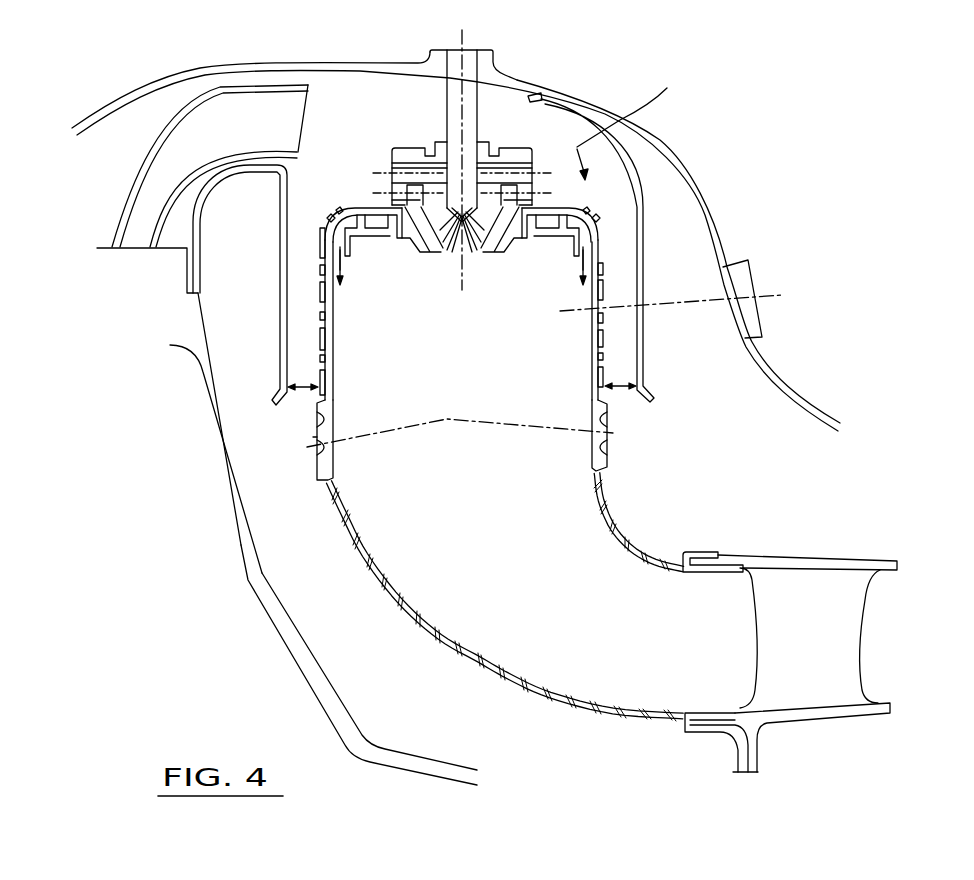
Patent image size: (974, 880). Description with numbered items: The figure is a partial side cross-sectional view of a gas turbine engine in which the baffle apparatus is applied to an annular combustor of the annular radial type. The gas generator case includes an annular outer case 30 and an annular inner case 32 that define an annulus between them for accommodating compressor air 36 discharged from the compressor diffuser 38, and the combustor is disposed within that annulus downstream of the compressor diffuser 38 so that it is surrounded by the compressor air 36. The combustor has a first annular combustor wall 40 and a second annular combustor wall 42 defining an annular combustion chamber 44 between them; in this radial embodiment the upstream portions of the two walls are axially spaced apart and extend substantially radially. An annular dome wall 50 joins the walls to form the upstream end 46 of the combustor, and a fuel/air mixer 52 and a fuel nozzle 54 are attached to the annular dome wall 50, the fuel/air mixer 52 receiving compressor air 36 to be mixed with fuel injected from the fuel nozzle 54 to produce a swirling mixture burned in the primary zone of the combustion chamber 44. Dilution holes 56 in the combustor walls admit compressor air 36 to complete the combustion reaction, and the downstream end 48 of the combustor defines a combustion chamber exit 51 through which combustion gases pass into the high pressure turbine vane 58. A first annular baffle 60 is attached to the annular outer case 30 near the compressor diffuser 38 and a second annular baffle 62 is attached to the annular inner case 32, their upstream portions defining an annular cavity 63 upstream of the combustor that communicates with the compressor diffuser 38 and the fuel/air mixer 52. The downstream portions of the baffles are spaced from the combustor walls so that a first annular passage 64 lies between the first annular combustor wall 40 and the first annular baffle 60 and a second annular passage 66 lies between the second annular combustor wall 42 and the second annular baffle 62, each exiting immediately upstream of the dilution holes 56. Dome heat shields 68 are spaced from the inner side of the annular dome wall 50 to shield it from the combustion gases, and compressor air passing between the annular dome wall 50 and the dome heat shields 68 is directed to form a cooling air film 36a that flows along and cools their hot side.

The annular outer case 30 is at (670, 145).
The annular inner case 32 is at (278, 637).
The compressor air 36 is at (630, 119).
The cooling air film 36a is at (343, 258).
The compressor diffuser 38 is at (157, 167).
The first annular combustor wall 40 is at (628, 550).
The second annular combustor wall 42 is at (362, 540).
The annular combustion chamber 44 is at (525, 401).
The upstream end 46 is at (323, 225).
The downstream end 48 is at (718, 553).
The annular dome wall 50 is at (357, 207).
The combustion chamber exit 51 is at (733, 677).
The fuel/air mixer 52 is at (345, 172).
The fuel nozzle 54 is at (447, 102).
The dilution holes 56 is at (303, 392).
The high pressure turbine vane 58 is at (843, 619).
The first annular baffle 60 is at (645, 214).
The second annular baffle 62 is at (280, 312).
The annular cavity 63 is at (398, 132).
The first annular passage 64 is at (622, 390).
The second annular passage 66 is at (313, 437).
The dome heat shields 68 is at (547, 233).